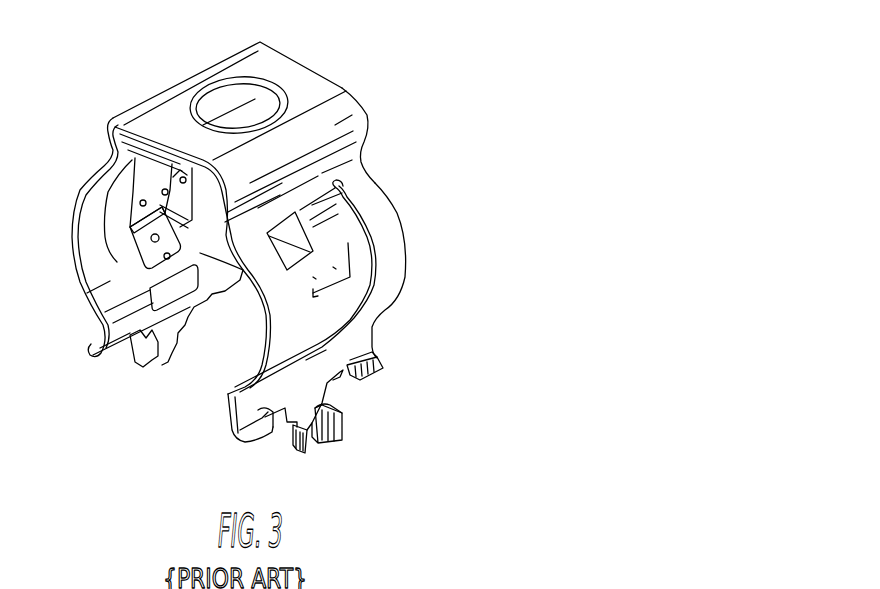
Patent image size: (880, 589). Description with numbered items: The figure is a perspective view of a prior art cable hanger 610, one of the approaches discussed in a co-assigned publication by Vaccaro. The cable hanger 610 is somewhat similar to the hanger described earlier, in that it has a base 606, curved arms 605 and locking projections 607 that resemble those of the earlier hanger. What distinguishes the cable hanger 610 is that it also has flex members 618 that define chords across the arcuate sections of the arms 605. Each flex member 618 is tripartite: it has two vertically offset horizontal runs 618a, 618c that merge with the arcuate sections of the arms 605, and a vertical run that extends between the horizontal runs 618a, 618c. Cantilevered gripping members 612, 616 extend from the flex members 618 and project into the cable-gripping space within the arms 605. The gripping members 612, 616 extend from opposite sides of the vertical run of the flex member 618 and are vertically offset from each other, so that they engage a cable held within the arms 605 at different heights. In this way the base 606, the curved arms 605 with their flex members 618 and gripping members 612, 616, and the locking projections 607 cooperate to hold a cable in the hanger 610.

The cable hanger 610 is at (454, 171).
The base 606 is at (320, 90).
The curved arms 605 is at (355, 164).
The cantilevered gripping member 616 is at (134, 242).
The cantilevered gripping member 612 is at (290, 237).
The flex member 618 is at (344, 294).
The horizontal run 618a is at (332, 242).
The horizontal run 618c is at (305, 312).
The locking projections 607 is at (317, 442).